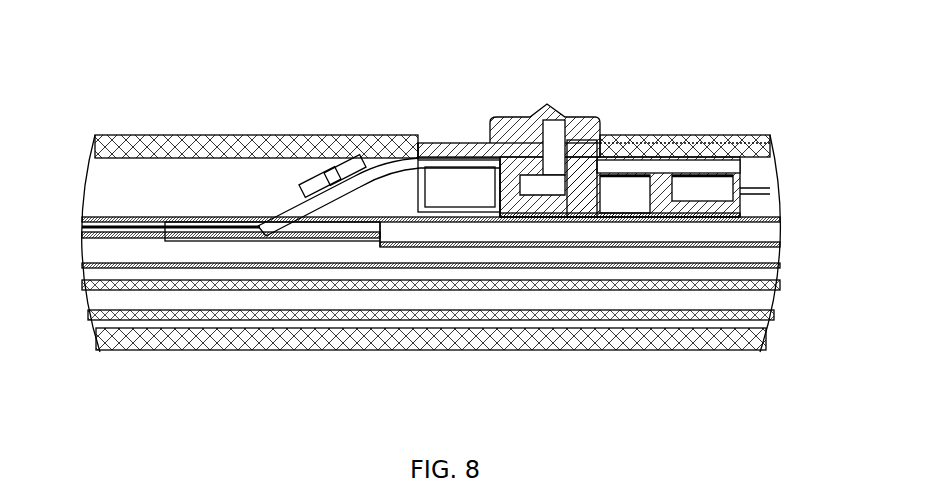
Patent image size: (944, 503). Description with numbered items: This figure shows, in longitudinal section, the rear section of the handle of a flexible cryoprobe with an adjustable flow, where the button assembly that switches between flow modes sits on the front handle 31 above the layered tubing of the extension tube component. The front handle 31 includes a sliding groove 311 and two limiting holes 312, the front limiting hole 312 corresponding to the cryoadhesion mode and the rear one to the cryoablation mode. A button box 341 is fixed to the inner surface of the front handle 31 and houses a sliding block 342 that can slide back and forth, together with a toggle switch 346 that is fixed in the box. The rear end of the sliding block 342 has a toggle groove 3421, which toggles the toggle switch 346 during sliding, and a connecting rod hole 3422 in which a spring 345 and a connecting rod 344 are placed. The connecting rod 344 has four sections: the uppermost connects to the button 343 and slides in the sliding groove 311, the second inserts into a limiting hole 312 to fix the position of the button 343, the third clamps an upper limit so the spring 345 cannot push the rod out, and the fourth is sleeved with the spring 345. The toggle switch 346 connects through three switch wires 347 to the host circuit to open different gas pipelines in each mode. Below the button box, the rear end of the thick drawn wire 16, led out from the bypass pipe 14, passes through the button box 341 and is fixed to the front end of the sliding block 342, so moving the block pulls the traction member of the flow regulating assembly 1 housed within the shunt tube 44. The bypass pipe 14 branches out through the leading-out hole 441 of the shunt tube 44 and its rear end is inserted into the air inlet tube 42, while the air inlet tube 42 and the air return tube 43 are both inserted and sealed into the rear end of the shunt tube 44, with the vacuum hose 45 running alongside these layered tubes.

The flow regulating assembly 1 is at (262, 135).
The bypass pipe 14 is at (320, 136).
The thick drawn wire 16 is at (385, 136).
The front handle 31 is at (98, 136).
The sliding groove 311 is at (515, 125).
The limiting hole 312 is at (470, 142).
The button box 341 is at (745, 218).
The sliding block 342 is at (620, 140).
The toggle groove 3421 is at (718, 140).
The connecting rod hole 3422 is at (520, 218).
The button 343 is at (567, 140).
The connecting rod 344 is at (547, 118).
The spring 345 is at (553, 218).
The toggle switch 346 is at (755, 146).
The switch wire 347 is at (767, 192).
The air inlet tube 42 is at (683, 140).
The air return tube 43 is at (643, 248).
The shunt tube 44 is at (300, 265).
The leading-out hole 441 is at (262, 222).
The vacuum hose 45 is at (383, 300).